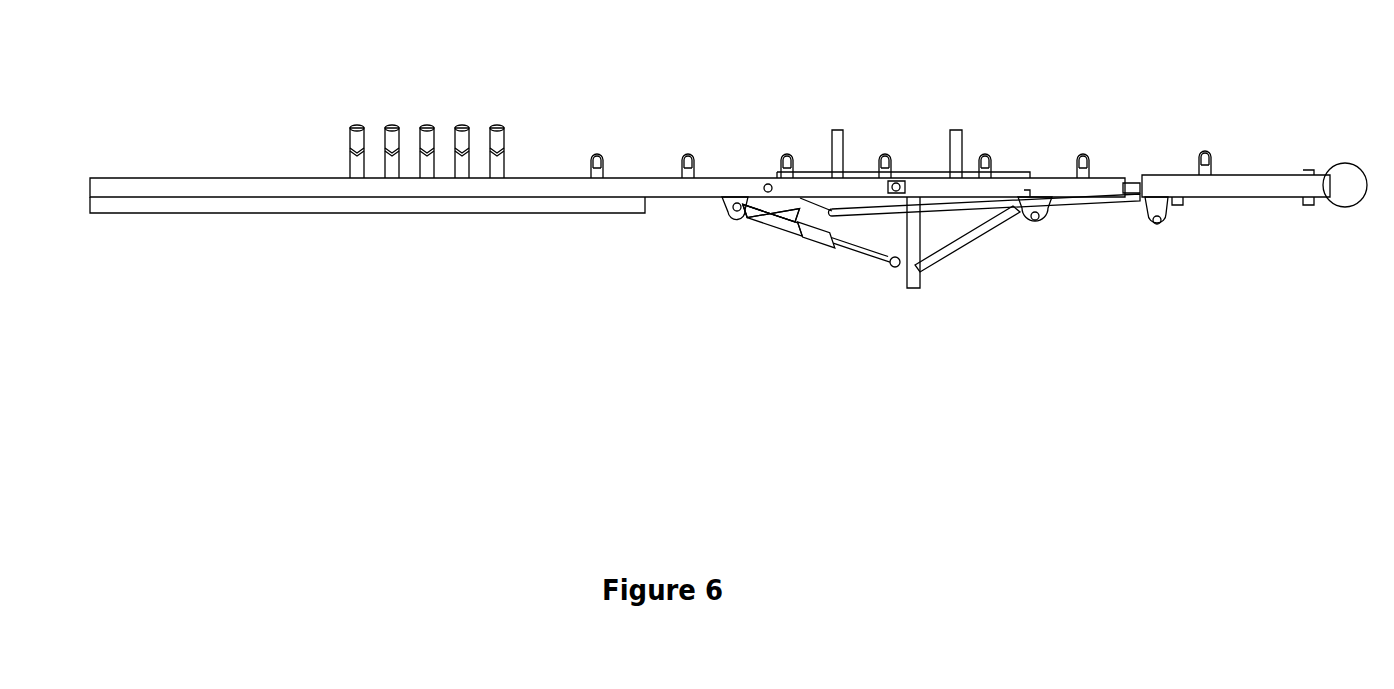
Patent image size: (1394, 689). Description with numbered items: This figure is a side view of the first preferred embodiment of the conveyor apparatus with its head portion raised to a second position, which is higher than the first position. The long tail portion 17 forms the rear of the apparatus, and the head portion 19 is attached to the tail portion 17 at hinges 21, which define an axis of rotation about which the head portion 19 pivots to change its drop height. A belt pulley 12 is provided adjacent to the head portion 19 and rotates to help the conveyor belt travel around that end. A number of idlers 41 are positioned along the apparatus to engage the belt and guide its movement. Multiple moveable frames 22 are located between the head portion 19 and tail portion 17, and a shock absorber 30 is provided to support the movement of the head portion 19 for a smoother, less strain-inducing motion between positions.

The belt pulley 12 is at (1343, 170).
The tail portion 17 is at (208, 234).
The head portion 19 is at (1239, 224).
The hinges 21 is at (898, 180).
The moveable frames 22 is at (877, 98).
The shock absorbers 30 is at (804, 223).
The idlers 41 is at (1205, 150).